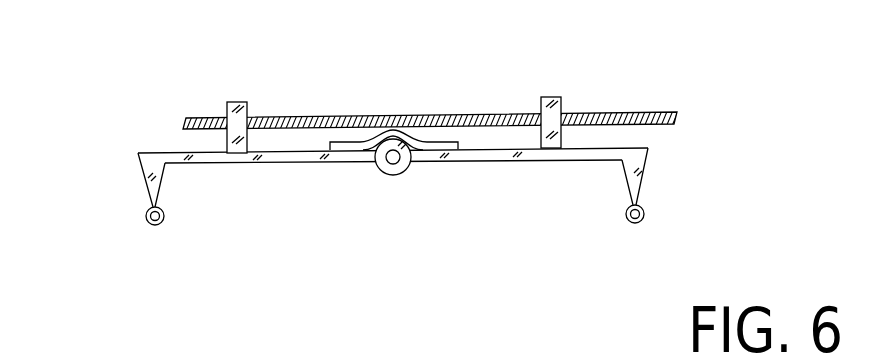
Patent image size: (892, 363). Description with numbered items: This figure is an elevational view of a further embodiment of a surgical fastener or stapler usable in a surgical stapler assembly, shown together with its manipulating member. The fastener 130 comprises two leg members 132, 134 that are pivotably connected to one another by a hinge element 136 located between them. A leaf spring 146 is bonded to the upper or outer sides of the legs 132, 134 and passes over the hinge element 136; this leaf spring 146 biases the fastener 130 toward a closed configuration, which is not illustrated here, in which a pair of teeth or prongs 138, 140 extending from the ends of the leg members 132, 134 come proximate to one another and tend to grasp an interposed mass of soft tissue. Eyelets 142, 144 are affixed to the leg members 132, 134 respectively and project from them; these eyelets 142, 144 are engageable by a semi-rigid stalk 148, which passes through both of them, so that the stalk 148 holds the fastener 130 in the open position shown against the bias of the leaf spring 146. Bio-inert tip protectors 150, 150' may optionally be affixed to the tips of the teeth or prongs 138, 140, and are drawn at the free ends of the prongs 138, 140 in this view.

The fastener 130 is at (402, 92).
The leg member 132 is at (288, 163).
The leg member 134 is at (500, 160).
The hinge element 136 is at (385, 173).
The tooth or prong 138 is at (142, 176).
The tooth or prong 140 is at (645, 173).
The eyelet 142 is at (236, 102).
The eyelet 144 is at (540, 98).
The leaf spring 146 is at (343, 143).
The semi-rigid stalk 148 is at (648, 112).
The bio-inert tip protector 150 is at (158, 249).
The bio-inert tip protector 150' is at (590, 248).